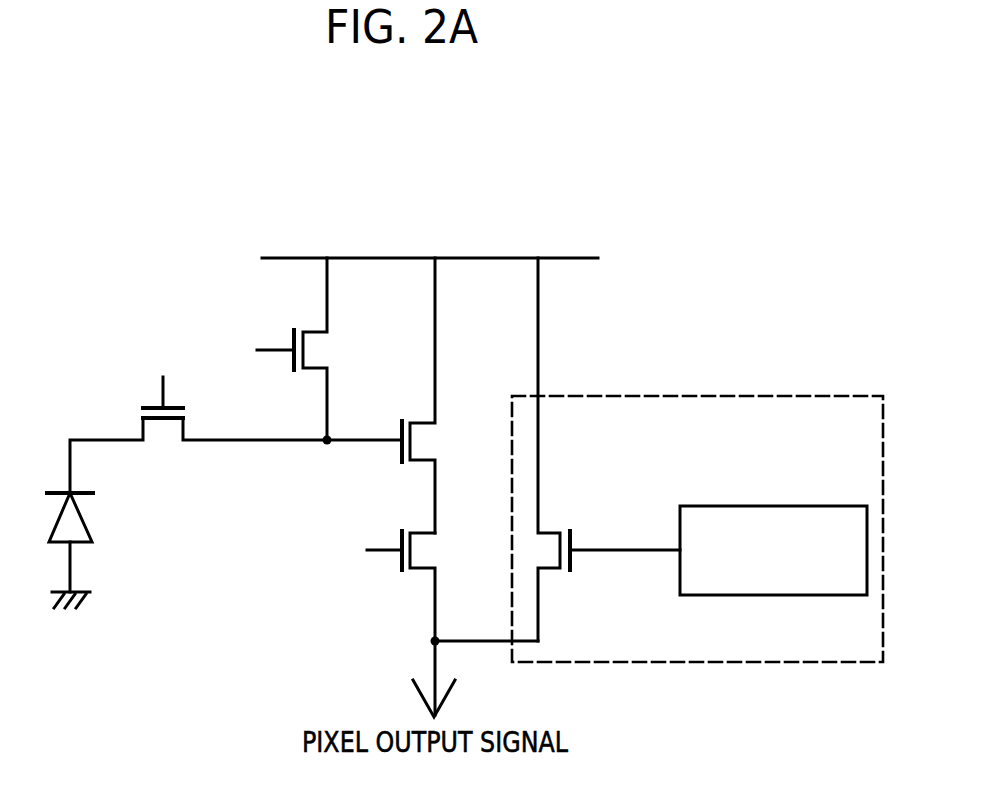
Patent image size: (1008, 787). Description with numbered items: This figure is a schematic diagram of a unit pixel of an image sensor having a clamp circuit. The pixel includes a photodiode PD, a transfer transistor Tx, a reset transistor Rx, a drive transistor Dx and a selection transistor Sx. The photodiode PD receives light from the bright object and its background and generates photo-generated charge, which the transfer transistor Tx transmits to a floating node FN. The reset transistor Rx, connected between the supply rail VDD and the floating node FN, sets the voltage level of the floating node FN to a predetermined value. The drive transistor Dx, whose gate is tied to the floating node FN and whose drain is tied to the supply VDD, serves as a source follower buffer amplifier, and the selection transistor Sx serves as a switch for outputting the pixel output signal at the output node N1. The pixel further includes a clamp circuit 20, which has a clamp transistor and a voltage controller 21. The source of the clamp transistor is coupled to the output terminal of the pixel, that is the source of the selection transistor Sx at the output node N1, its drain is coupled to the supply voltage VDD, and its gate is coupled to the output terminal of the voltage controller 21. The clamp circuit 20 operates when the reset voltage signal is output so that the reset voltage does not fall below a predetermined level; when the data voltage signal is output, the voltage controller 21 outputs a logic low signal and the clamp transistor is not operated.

The clamp circuit 20 is at (860, 396).
The voltage controller 21 is at (843, 506).
The supply voltage rail VDD is at (430, 240).
The reset transistor Rx is at (278, 349).
The transfer transistor Tx is at (236, 416).
The floating node FN is at (325, 460).
The photodiode PD is at (91, 550).
The drive transistor Dx is at (437, 395).
The selection transistor Sx is at (385, 623).
The output node N1 is at (464, 640).